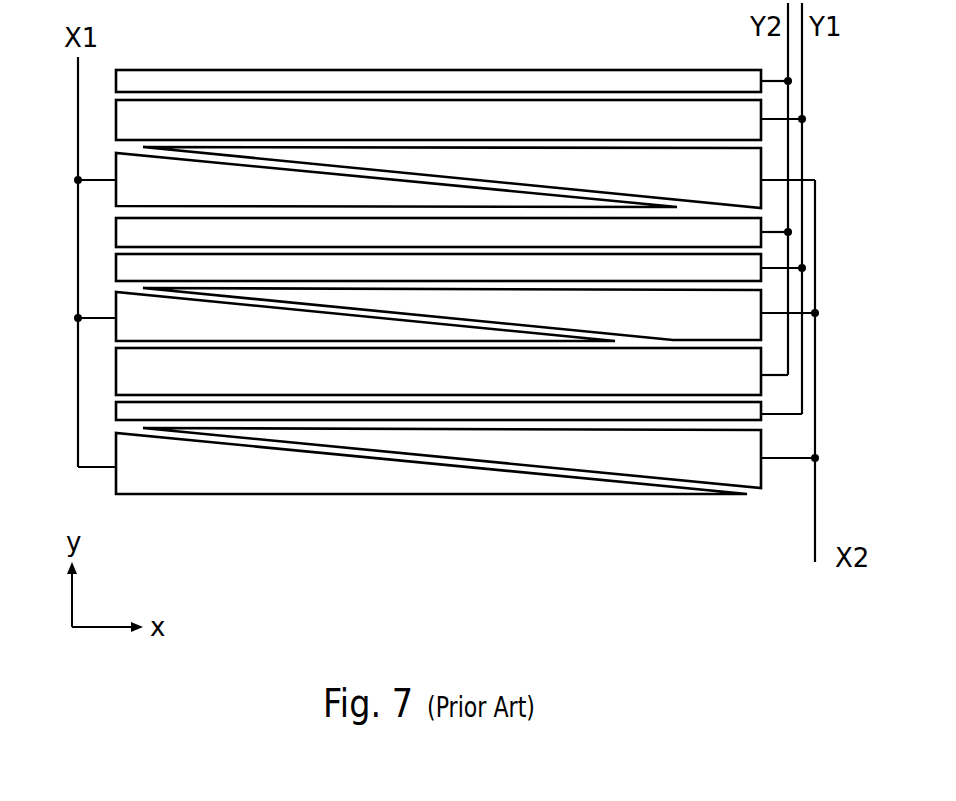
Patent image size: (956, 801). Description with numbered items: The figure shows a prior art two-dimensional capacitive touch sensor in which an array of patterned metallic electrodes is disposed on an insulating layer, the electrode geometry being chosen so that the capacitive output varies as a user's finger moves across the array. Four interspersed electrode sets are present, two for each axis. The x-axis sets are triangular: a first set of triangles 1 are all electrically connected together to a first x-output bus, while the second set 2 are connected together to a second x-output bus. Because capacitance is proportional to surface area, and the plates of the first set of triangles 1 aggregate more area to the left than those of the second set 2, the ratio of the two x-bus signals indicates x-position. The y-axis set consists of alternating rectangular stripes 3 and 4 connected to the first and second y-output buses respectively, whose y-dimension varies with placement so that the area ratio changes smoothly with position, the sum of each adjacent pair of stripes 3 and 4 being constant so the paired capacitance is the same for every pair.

The first set of triangles 1 is at (158, 193).
The second set of triangles 2 is at (738, 190).
The Y1-connected rectangular stripe 3 is at (128, 121).
The Y2-connected rectangular stripe 4 is at (237, 80).